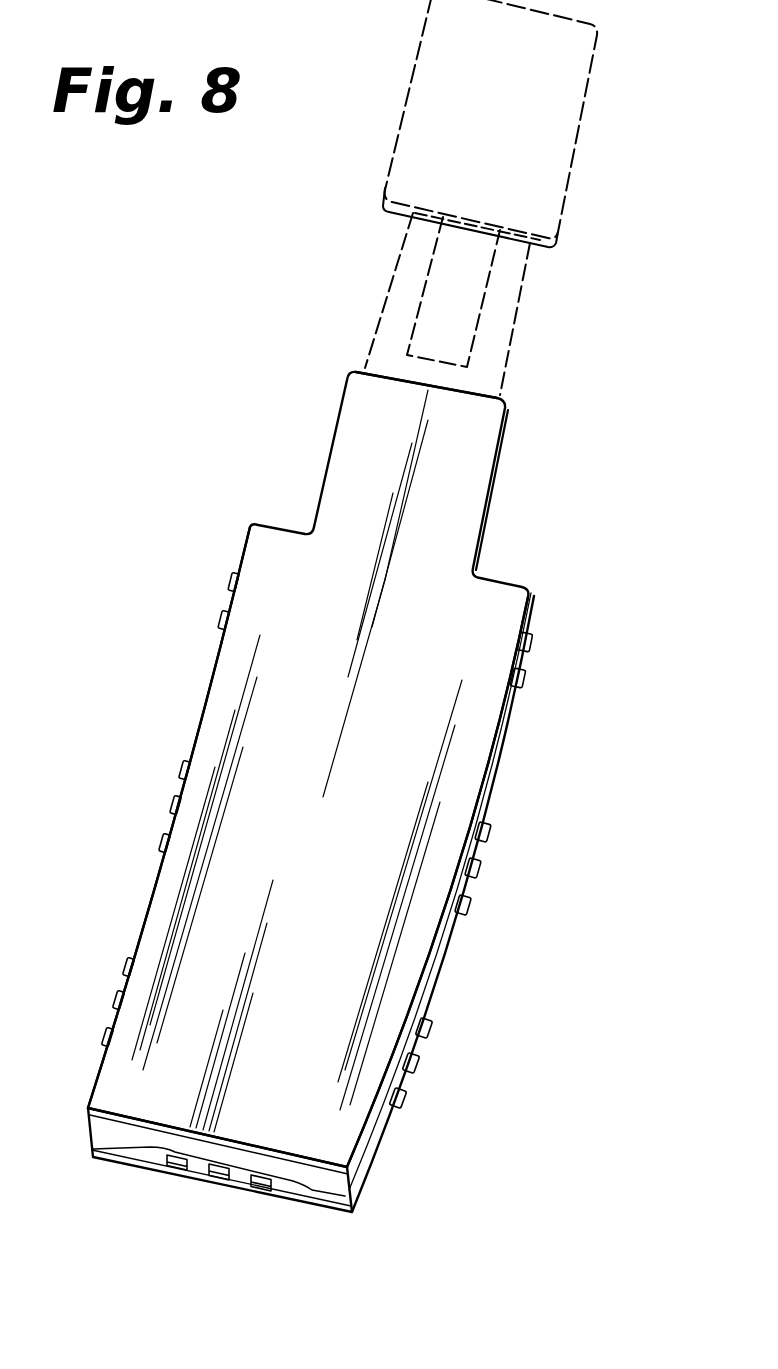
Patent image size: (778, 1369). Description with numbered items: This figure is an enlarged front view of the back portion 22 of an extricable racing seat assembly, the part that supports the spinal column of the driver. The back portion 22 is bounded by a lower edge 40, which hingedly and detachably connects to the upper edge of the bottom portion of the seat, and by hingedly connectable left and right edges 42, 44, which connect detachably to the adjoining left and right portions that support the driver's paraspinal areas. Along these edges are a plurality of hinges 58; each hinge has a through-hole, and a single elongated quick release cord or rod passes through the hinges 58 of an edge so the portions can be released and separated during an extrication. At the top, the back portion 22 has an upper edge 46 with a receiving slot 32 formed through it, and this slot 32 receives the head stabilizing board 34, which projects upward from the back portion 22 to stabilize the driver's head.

The back portion 22 is at (250, 522).
The receiving slot 32 is at (500, 397).
The head stabilizing board 34 is at (517, 312).
The lower edge 40 is at (300, 1207).
The left edge 42 is at (505, 744).
The right edge 44 is at (207, 692).
The upper edge 46 is at (365, 368).
The hinges 58 is at (228, 583).